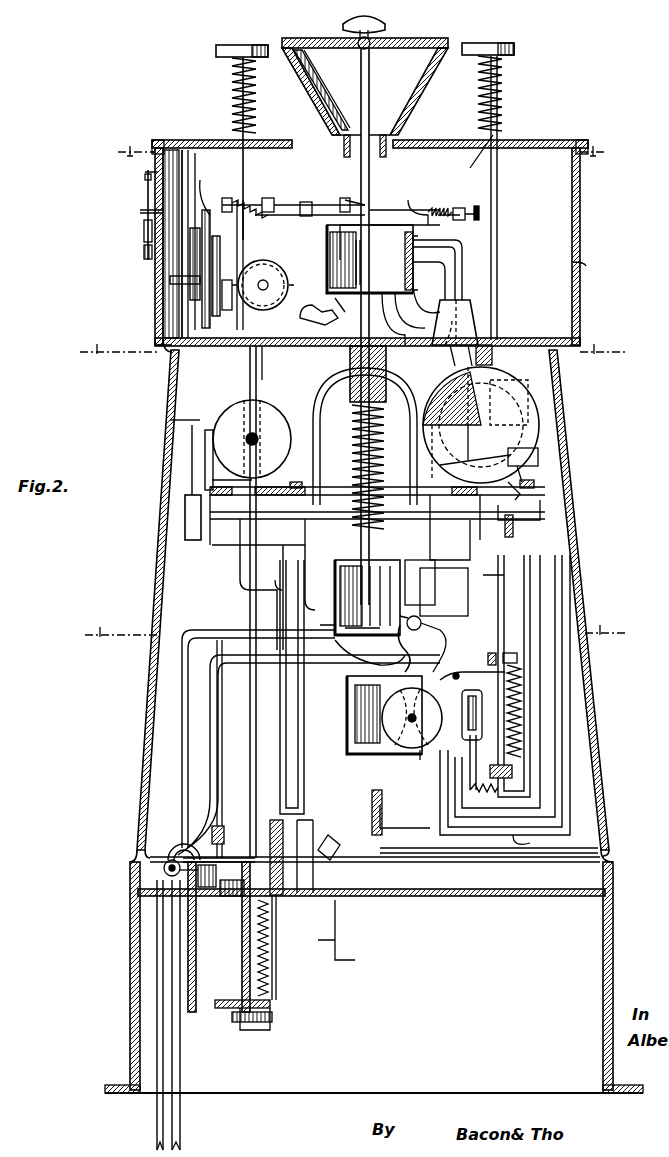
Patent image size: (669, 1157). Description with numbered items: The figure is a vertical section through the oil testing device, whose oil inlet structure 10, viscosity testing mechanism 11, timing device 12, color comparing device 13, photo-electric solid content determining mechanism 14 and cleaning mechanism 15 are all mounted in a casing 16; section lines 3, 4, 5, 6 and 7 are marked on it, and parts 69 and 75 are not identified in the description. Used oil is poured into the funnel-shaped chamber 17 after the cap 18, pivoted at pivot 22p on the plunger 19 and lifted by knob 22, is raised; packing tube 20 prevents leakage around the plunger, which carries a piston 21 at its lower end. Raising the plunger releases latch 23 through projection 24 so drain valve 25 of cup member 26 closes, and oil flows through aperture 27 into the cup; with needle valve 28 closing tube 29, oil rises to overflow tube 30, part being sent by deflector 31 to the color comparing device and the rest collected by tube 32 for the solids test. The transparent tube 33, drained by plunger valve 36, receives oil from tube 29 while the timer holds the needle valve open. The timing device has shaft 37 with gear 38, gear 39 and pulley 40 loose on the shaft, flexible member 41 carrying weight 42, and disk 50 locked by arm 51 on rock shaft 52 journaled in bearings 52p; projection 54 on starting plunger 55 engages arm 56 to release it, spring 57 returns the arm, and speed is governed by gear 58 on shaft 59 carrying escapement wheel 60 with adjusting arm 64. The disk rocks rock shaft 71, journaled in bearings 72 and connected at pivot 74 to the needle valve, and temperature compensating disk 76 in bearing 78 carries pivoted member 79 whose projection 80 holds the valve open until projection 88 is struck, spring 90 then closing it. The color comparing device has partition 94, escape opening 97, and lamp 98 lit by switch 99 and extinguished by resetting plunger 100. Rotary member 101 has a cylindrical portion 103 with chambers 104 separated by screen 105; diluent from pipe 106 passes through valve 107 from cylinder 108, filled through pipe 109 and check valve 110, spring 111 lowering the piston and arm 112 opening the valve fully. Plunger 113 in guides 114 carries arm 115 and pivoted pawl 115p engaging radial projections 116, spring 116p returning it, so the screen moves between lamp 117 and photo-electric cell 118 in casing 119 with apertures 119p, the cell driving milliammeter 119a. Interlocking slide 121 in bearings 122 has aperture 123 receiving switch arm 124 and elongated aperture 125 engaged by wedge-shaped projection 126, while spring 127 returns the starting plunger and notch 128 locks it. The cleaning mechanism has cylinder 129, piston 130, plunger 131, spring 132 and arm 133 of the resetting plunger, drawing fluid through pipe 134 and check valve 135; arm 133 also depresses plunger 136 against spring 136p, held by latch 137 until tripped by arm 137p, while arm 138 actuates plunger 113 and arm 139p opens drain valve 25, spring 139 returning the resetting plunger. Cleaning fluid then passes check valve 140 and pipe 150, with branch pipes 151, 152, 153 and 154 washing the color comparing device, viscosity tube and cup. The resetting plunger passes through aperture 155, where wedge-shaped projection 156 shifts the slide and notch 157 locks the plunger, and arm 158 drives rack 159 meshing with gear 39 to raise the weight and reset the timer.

The section line 3 is at (359, 151).
The section line 4 is at (351, 350).
The section line 5 is at (352, 632).
The section line 6 is at (150, 256).
The vertical shaft 7 is at (200, 193).
The oil inlet structure 10 is at (454, 44).
The viscosity testing mechanism 11 is at (355, 360).
The timing device 12 is at (136, 282).
The color comparing device 13 is at (510, 410).
The photo-electric solid content determining mechanism 14 is at (430, 758).
The cleaning mechanism 15 is at (180, 843).
The casing 16 is at (374, 616).
The funnel-shaped chamber 17 is at (414, 102).
The cap 18 is at (405, 36).
The plunger 19 is at (356, 76).
The packing member or tube 20 is at (372, 82).
The piston 21 is at (340, 583).
The knob 22 is at (343, 17).
The pivot 22p is at (380, 50).
The latch 23 is at (300, 314).
The projection 24 is at (348, 353).
The drain valve 25 is at (340, 306).
The cup member 26 is at (327, 244).
The aperture 27 is at (390, 156).
The needle valve 28 is at (372, 260).
The tube 29 is at (380, 278).
The overflow tube 30 is at (458, 240).
The deflector 31 is at (470, 316).
The tube 32 is at (377, 503).
The transparent tube 33 is at (352, 388).
The plunger valve 36 is at (390, 902).
The shaft 37 is at (200, 280).
The gear 38 is at (210, 306).
The gear 39 is at (168, 290).
The pulley 40 is at (222, 298).
The flexible member 41 is at (170, 416).
The weight 42 is at (185, 523).
The disk 50 is at (245, 437).
The arm 51 is at (196, 150).
The rock shaft 52 is at (308, 200).
The bearings 52p is at (466, 203).
The projection 54 is at (500, 184).
The starting plunger 55 is at (510, 148).
The arm 56 is at (482, 212).
The spring 57 is at (440, 206).
The gear 58 is at (190, 253).
The shaft 59 is at (152, 222).
The escapement wheel 60 is at (146, 208).
The arm 64 is at (144, 175).
The arm 69 is at (199, 186).
The rock shaft 71 is at (258, 198).
The bearings 72 is at (289, 186).
The pivot connection 74 is at (372, 184).
The coil 75 is at (356, 260).
The disk 76 is at (258, 382).
The bearing 78 is at (269, 363).
The pivoted member 79 is at (174, 368).
The projection 80 is at (166, 354).
The projection 88 is at (236, 353).
The spring 90 is at (268, 196).
The vertical partition 94 is at (495, 350).
The opening 97 is at (524, 523).
The electric lamp 98 is at (530, 393).
The switch 99 is at (528, 468).
The resetting plunger 100 is at (238, 130).
The rotary member 101 is at (408, 748).
The cylindrical portion 103 is at (466, 742).
The chambers 104 is at (425, 753).
The fine mesh screen 105 is at (448, 630).
The pipe 106 is at (422, 623).
The valve 107 is at (418, 618).
The cylinder 108 is at (408, 590).
The pipe 109 is at (222, 626).
The check valve 110 is at (332, 623).
The spring 111 is at (352, 456).
The arm 112 is at (432, 558).
The plunger 113 is at (505, 603).
The guides 114 is at (550, 638).
The arm 115 is at (522, 672).
The pivoted pawl 115p is at (517, 644).
The radial projections 116 is at (388, 674).
The spring 116p is at (522, 740).
The electric lamp 117 is at (522, 702).
The photo-electric cell 118 is at (355, 743).
The casing 119 is at (347, 690).
The apertures 119p is at (372, 788).
The milliammeter 119a is at (218, 428).
The interlocking slide 121 is at (524, 488).
The bearings 122 is at (292, 475).
The aperture 123 is at (545, 498).
The operating arm 124 is at (536, 478).
The elongated aperture 125 is at (469, 458).
The wedge-shaped projection 126 is at (536, 450).
The spring 127 is at (508, 90).
The notch 128 is at (470, 456).
The cylinder 129 is at (188, 951).
The piston 130 is at (198, 913).
The plunger 131 is at (258, 1023).
The spring 132 is at (275, 1003).
The arm 133 is at (288, 808).
The pipe 134 is at (175, 993).
The check valve 135 is at (160, 875).
The plunger 136 is at (340, 983).
The spring 136p is at (342, 968).
The spring-pressed latch 137 is at (322, 830).
The arm 137p is at (476, 824).
The arm 138 is at (265, 528).
The spring 139 is at (258, 95).
The arm 139p is at (306, 203).
The check valve 140 is at (212, 830).
The pipe 150 is at (215, 733).
The branch pipe 151 is at (270, 588).
The branch pipe 152 is at (449, 406).
The branch pipe 153 is at (418, 293).
The branch pipe 154 is at (430, 198).
The aperture 155 is at (210, 482).
The wedge-shaped projection 156 is at (205, 458).
The notch 157 is at (261, 527).
The arm 158 is at (185, 150).
The rack 159 is at (165, 266).